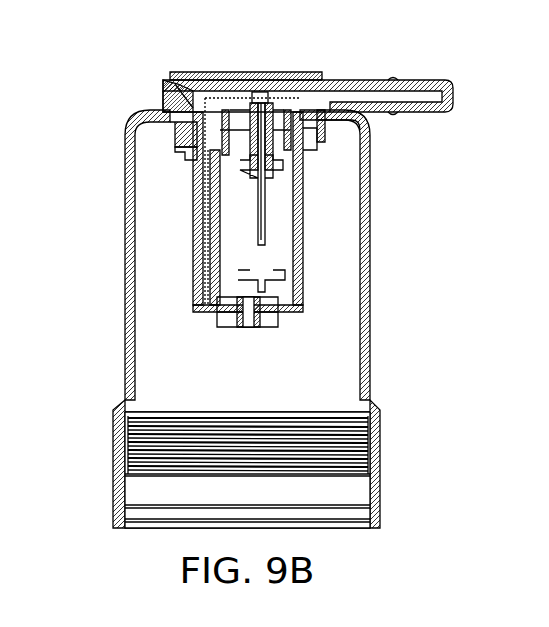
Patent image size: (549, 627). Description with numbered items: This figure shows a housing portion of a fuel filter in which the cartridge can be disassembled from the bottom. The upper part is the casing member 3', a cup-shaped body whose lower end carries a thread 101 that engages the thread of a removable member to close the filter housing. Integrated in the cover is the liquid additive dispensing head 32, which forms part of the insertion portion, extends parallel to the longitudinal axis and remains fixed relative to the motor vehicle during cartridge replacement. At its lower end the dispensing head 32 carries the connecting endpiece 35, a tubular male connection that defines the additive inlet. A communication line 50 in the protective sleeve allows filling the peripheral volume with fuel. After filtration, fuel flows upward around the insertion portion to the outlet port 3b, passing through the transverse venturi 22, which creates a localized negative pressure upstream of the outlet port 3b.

The casing member 3' is at (226, 309).
The outlet port 3b is at (411, 98).
The venturi 22 is at (261, 98).
The communication line 50 is at (207, 218).
The liquid additive dispensing head 32 is at (305, 296).
The connecting endpiece 35 is at (258, 318).
The thread 101 is at (372, 444).